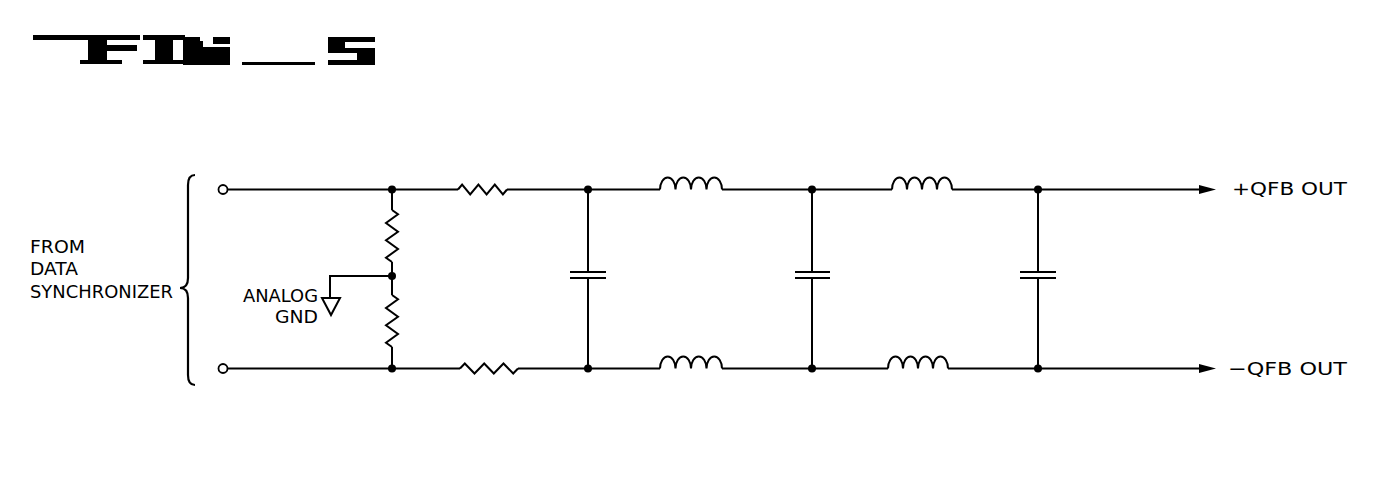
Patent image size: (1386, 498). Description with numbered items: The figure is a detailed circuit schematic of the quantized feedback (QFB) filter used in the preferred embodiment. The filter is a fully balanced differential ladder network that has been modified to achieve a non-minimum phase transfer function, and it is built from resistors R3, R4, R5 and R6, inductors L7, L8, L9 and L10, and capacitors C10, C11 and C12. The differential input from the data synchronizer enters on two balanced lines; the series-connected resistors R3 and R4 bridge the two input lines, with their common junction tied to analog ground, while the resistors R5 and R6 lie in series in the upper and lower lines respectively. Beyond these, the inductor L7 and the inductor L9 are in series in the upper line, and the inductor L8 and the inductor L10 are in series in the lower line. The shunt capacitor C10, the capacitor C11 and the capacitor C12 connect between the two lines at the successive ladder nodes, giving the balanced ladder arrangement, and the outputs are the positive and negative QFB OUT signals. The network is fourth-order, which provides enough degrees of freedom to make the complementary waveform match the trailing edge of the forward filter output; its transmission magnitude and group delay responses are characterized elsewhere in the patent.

The resistor R3 is at (427, 236).
The resistor R4 is at (427, 321).
The resistor R5 is at (502, 189).
The resistor R6 is at (506, 372).
The inductor L7 is at (698, 184).
The inductor L8 is at (696, 362).
The inductor L9 is at (927, 184).
The inductor L10 is at (921, 362).
The capacitor C10 is at (621, 275).
The capacitor C11 is at (842, 275).
The capacitor C12 is at (1065, 275).